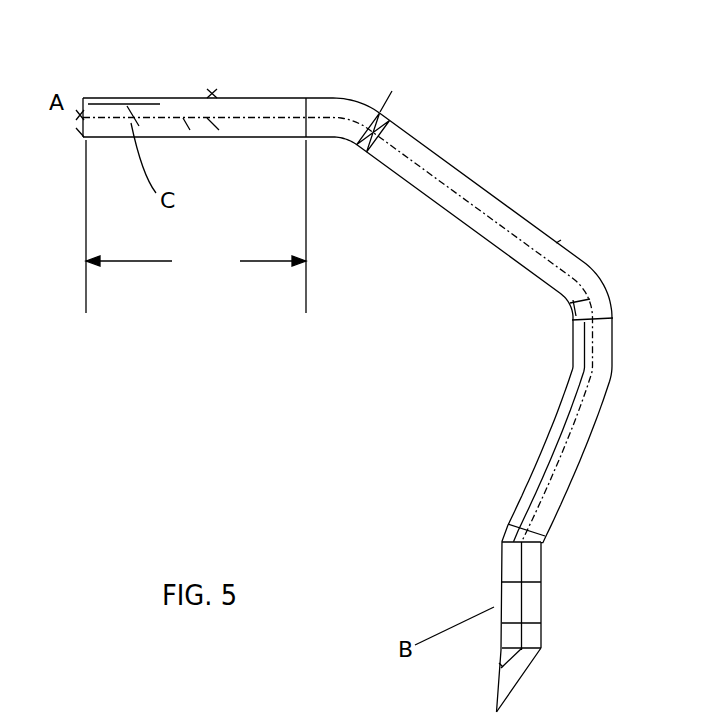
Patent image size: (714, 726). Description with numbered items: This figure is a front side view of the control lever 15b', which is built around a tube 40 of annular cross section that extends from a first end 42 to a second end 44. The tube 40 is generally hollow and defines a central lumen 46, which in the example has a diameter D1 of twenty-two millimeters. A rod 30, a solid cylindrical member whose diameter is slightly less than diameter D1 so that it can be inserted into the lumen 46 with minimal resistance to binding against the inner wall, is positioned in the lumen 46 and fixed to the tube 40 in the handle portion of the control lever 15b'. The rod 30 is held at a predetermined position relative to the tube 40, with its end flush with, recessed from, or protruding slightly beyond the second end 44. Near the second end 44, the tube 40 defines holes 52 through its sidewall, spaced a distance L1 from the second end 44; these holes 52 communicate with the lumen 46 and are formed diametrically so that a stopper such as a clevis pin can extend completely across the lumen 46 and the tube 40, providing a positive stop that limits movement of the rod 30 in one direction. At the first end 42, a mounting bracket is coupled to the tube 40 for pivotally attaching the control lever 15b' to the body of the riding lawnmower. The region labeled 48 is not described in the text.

The rod 30 is at (112, 101).
The second end 44 is at (83, 132).
The holes 52 is at (308, 96).
The tube 40 is at (531, 222).
The central lumen 46 is at (546, 478).
The first end 42 is at (544, 648).
The distal opening 48 is at (497, 660).
The control lever 15b' is at (303, 392).
The diameter D1 is at (157, 118).
The distance L1 is at (196, 226).